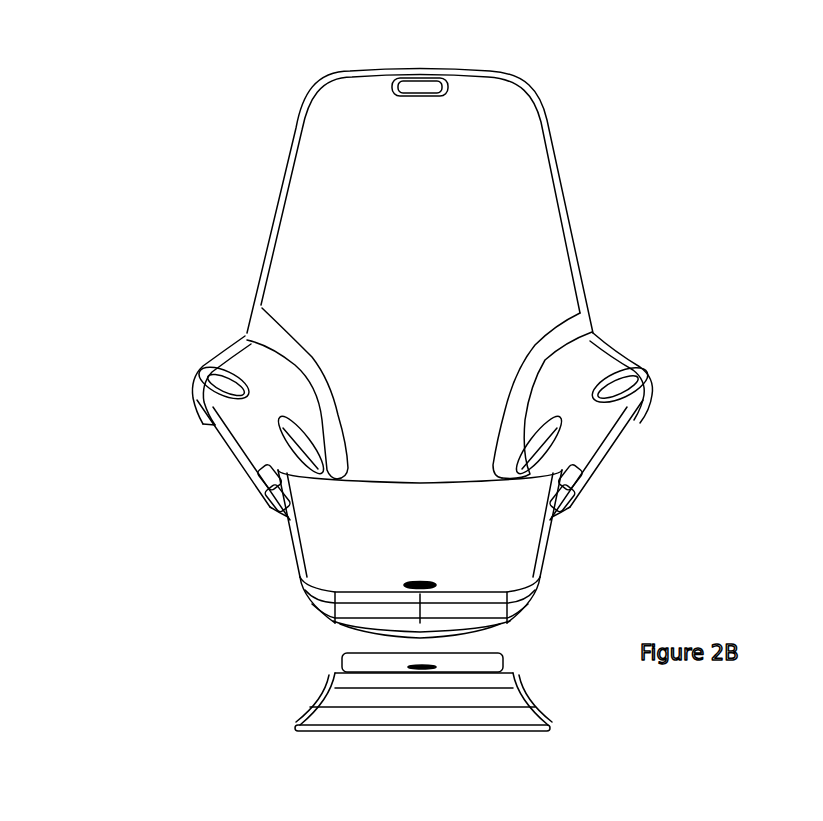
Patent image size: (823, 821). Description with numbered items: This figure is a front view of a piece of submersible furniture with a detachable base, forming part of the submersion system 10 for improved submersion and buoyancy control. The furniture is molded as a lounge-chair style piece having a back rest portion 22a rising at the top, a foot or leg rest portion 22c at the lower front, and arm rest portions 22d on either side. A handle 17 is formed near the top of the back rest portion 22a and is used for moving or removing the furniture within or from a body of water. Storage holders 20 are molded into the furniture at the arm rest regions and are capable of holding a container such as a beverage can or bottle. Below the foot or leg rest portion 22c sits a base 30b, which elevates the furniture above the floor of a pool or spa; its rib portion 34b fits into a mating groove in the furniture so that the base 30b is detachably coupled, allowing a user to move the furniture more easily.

The submersion system 10 is at (132, 155).
The handle 17 is at (443, 81).
The storage holder 20 is at (232, 398).
The back rest portion 22a is at (433, 205).
The foot or leg rest portion 22c is at (432, 548).
The arm rest portion 22d is at (240, 432).
The rib portion 34b is at (363, 657).
The base 30b is at (340, 711).